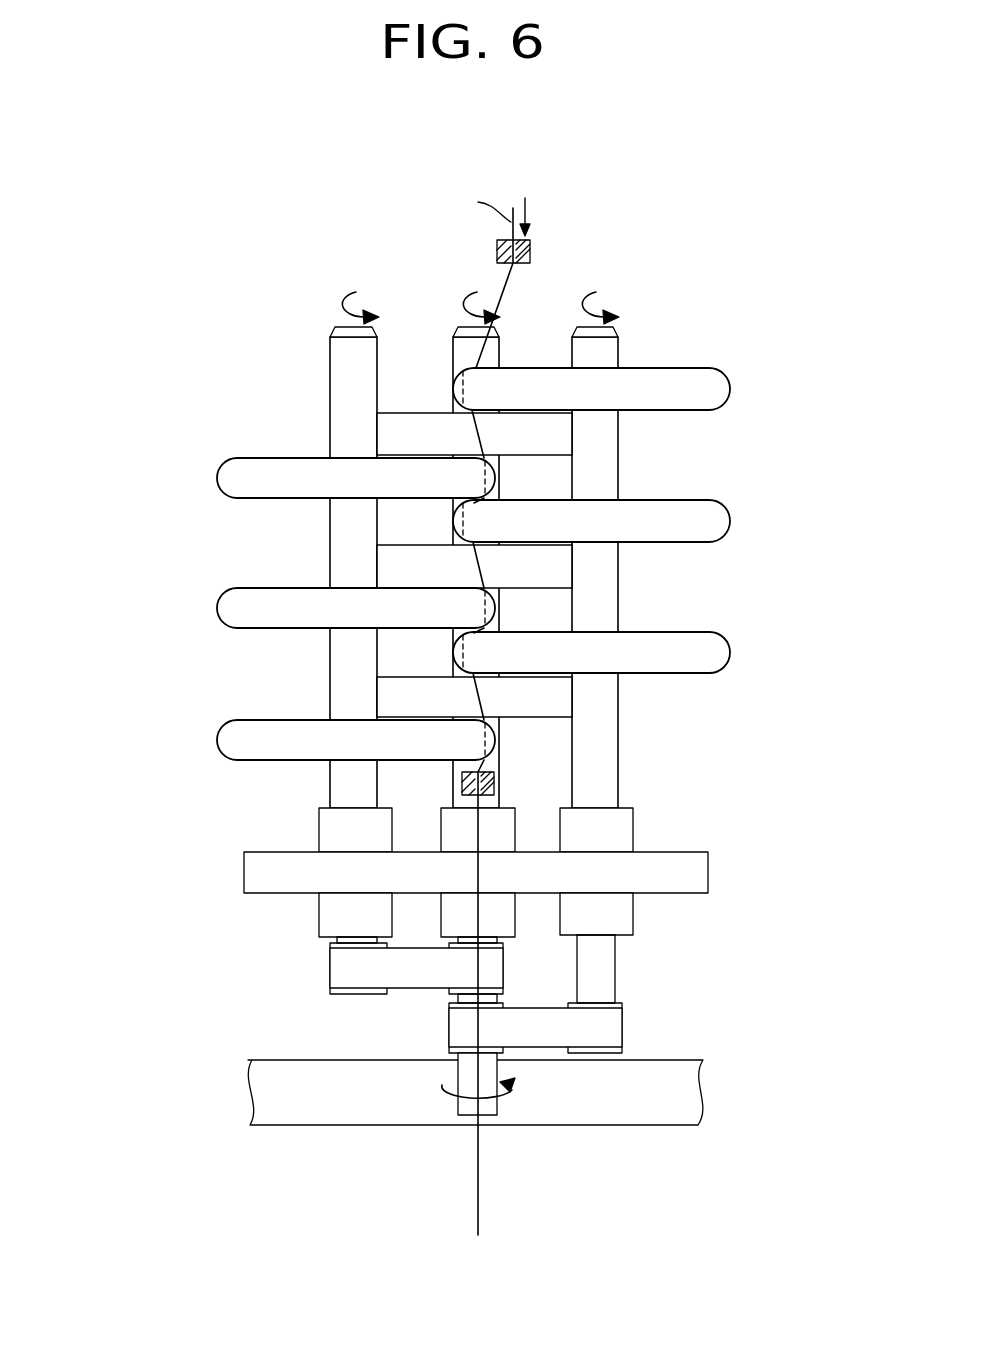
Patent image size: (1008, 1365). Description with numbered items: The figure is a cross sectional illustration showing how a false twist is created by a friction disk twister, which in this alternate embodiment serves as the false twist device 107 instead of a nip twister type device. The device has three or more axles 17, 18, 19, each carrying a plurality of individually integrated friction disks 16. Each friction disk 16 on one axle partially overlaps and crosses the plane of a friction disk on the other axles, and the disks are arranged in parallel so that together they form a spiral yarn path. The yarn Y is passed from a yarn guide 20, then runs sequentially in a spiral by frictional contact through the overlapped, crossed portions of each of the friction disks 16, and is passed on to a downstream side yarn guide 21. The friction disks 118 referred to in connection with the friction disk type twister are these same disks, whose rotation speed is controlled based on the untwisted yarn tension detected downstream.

The friction disk 16 is at (476, 564).
The friction disk 118 is at (776, 662).
The axle 17 is at (500, 347).
The axle 18 is at (378, 342).
The axle 19 is at (618, 356).
The yarn guide 20 is at (531, 252).
The downstream side yarn guide 21 is at (495, 783).
The false twist device 107 is at (476, 709).